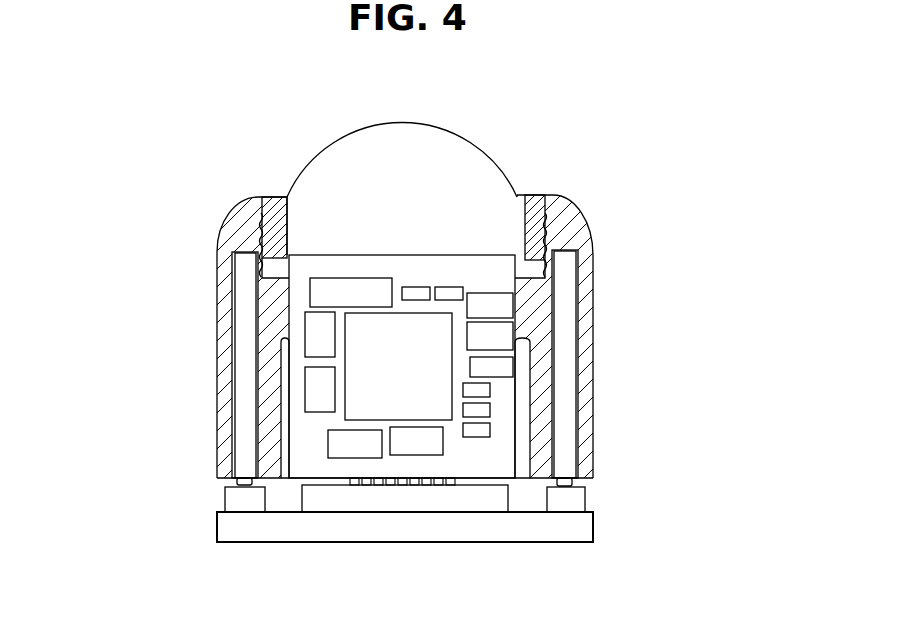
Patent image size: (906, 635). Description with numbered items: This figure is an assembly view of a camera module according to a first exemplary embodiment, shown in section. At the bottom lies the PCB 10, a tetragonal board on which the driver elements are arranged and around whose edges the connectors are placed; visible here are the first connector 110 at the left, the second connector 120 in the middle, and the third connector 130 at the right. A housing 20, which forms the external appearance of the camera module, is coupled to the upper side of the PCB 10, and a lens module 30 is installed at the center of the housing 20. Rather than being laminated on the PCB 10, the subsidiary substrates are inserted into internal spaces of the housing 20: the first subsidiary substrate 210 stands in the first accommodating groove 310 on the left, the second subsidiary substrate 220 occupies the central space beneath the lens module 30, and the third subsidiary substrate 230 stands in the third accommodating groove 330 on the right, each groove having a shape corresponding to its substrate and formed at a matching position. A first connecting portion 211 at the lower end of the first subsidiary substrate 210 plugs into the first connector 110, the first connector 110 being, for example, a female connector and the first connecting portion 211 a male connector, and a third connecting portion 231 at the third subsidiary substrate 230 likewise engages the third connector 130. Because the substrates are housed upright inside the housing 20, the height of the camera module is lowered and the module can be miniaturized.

The PCB 10 is at (275, 528).
The housing 20 is at (583, 223).
The lens module 30 is at (488, 165).
The first connector 110 is at (235, 500).
The second connector 120 is at (493, 502).
The third connector 130 is at (580, 497).
The first subsidiary substrate 210 is at (240, 387).
The first connecting portion 211 is at (237, 481).
The second subsidiary substrate 220 is at (516, 382).
The third subsidiary substrate 230 is at (568, 393).
The third connecting portion 231 is at (588, 478).
The first accommodating groove 310 is at (232, 252).
The third accommodating groove 330 is at (592, 260).